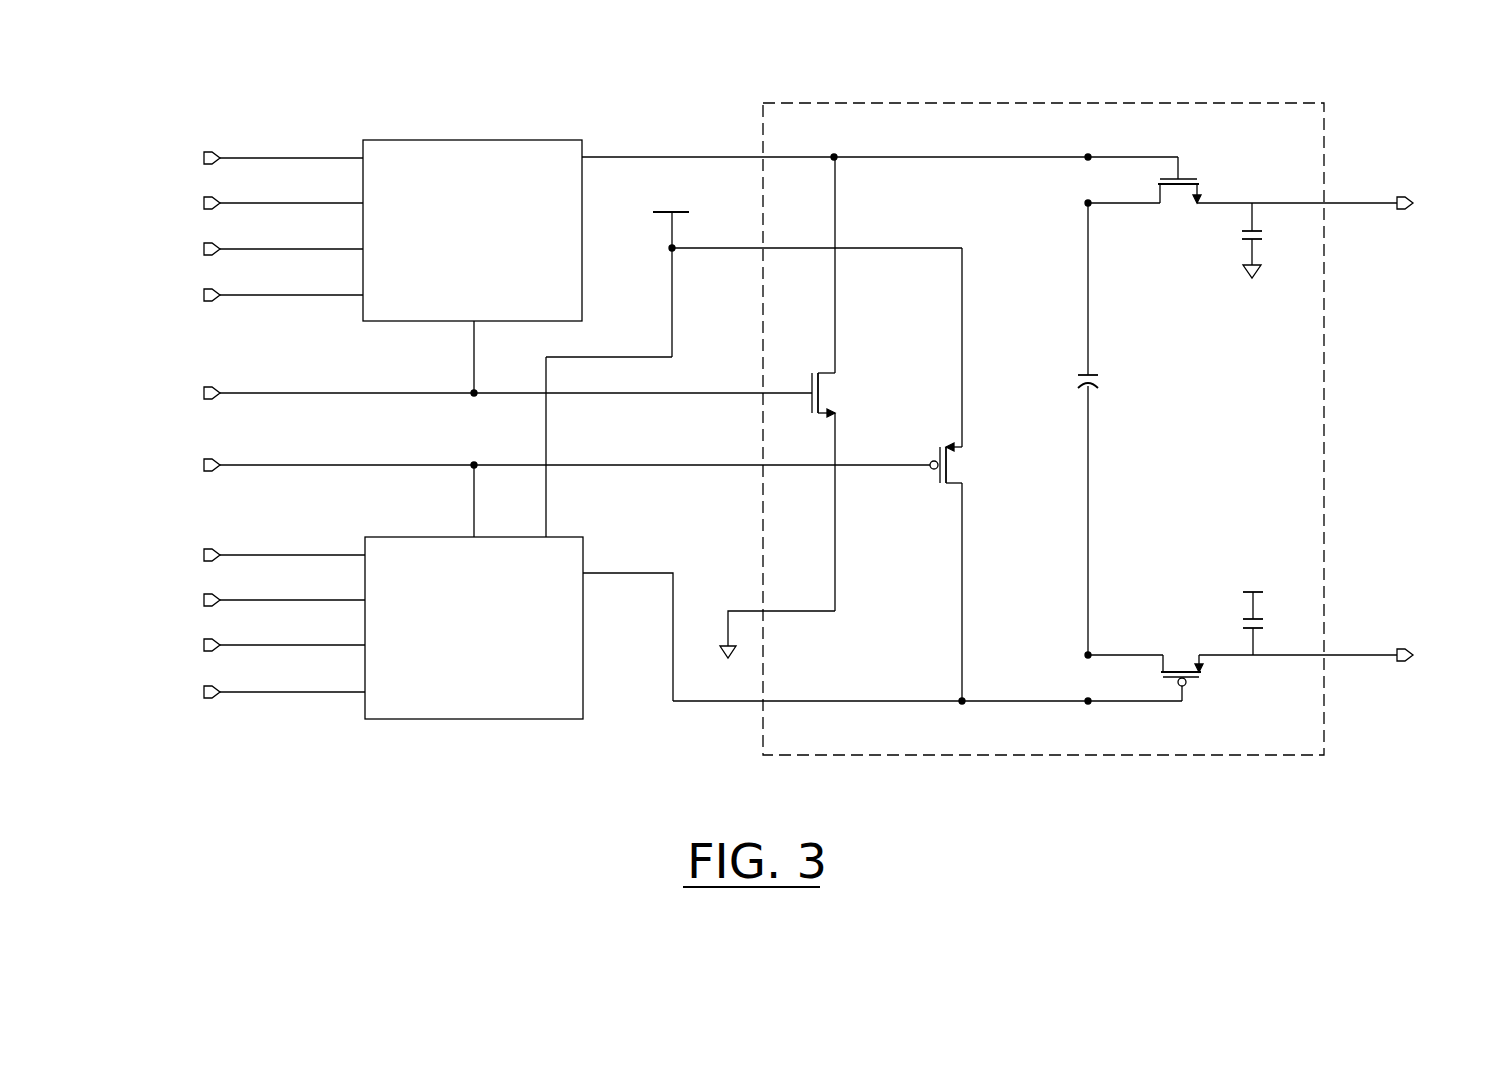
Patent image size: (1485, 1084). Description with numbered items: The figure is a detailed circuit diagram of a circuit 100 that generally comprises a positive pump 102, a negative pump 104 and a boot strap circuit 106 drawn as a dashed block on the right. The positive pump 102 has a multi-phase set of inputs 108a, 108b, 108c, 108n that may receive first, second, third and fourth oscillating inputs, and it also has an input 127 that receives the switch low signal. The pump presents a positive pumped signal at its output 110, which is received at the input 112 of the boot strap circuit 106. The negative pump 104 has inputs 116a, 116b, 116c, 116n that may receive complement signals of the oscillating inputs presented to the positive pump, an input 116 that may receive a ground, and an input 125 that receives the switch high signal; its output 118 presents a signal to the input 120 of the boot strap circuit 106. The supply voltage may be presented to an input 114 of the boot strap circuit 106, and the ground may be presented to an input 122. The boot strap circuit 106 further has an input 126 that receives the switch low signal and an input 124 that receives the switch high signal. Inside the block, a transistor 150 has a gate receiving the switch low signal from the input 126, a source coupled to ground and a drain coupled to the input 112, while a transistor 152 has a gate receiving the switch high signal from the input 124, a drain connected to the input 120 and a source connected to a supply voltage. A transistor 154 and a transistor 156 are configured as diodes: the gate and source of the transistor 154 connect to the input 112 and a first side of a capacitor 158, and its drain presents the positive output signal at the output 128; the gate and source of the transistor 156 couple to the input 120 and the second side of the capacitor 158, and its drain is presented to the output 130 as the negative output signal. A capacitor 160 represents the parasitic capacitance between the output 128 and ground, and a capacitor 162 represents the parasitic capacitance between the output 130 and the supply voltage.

The circuit 100 is at (338, 87).
The positive pump 102 is at (565, 140).
The negative pump 104 is at (567, 537).
The boot strap circuit 106 is at (830, 103).
The input 108a is at (360, 159).
The input 108b is at (360, 204).
The input 108c is at (360, 250).
The input 108n is at (360, 296).
The output 110 is at (585, 161).
The input 112 is at (763, 157).
The input 114 is at (763, 248).
The input 116 is at (544, 537).
The input 116a is at (360, 556).
The input 116b is at (360, 601).
The input 116c is at (360, 646).
The input 116n is at (360, 693).
The output 118 is at (586, 576).
The input 120 is at (763, 701).
The input 122 is at (763, 611).
The input 124 is at (763, 465).
The input 125 is at (471, 537).
The input 126 is at (763, 393).
The input 127 is at (470, 321).
The output 128 is at (1328, 203).
The output 130 is at (1328, 655).
The transistor 150 is at (843, 394).
The transistor 152 is at (968, 467).
The transistor 154 is at (1177, 201).
The transistor 156 is at (1184, 656).
The capacitor 158 is at (1100, 378).
The capacitor 160 is at (1233, 234).
The capacitor 162 is at (1240, 622).